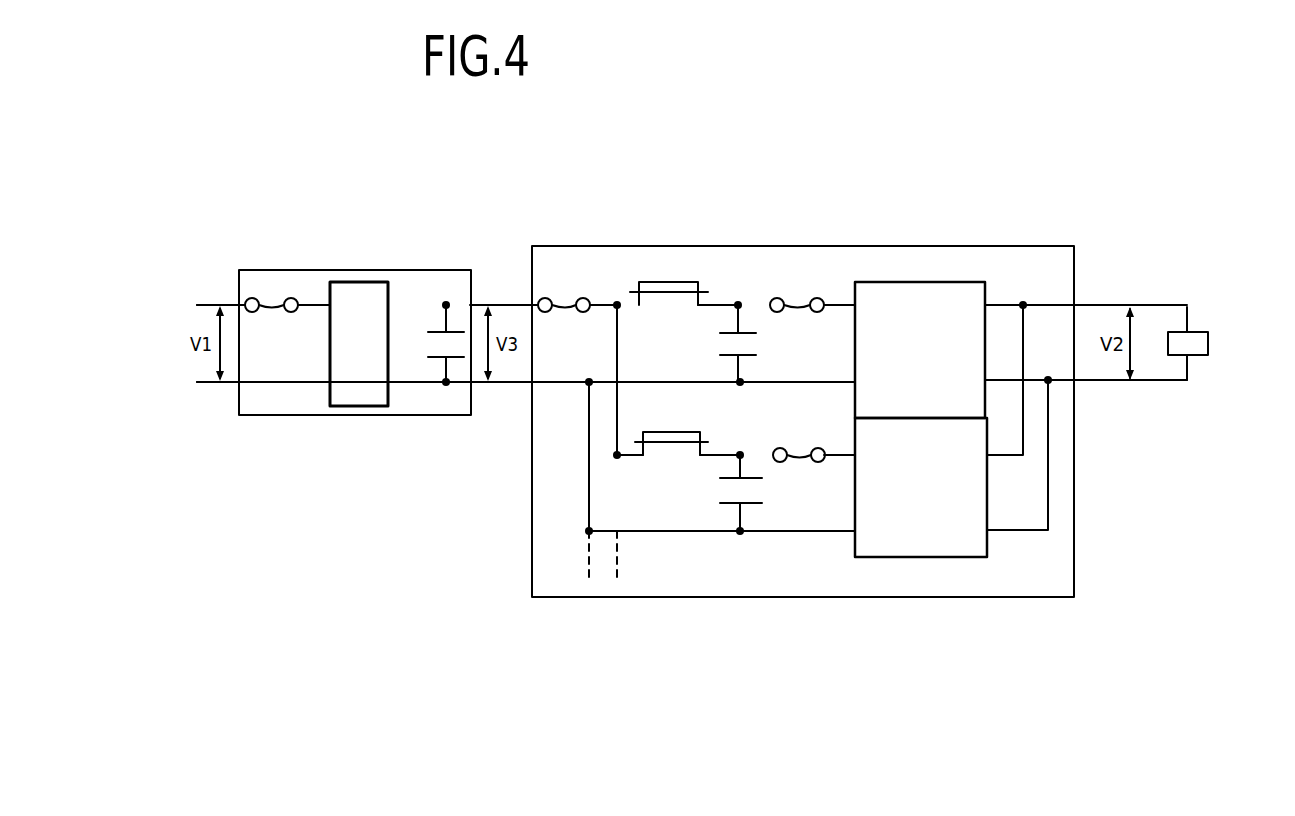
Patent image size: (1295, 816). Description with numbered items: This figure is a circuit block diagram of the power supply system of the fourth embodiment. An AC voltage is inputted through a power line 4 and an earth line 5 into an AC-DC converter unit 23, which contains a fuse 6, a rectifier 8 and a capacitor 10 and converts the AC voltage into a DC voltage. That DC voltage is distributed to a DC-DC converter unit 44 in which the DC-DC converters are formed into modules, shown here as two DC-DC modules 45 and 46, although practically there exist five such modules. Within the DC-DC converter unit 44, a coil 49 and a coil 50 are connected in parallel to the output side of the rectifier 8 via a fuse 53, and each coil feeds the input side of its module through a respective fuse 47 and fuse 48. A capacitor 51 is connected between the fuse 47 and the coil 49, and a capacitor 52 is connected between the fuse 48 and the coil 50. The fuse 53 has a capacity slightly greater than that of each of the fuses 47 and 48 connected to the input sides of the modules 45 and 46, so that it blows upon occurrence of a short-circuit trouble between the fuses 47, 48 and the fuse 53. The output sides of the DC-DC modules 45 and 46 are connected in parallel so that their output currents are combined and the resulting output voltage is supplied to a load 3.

The load 3 is at (1193, 356).
The power line 4 is at (200, 304).
The earth line 5 is at (200, 384).
The fuse 6 is at (268, 312).
The rectifier 8 is at (347, 407).
The capacitor 10 is at (433, 359).
The AC-DC converter unit 23 is at (243, 270).
The DC-DC converter unit 44 is at (1068, 246).
The DC-DC module 45 is at (975, 282).
The DC-DC module 46 is at (910, 558).
The fuse 47 is at (800, 312).
The fuse 48 is at (800, 449).
The coil 49 is at (647, 282).
The coil 50 is at (673, 443).
The capacitor 51 is at (720, 345).
The capacitor 52 is at (747, 487).
The fuse 53 is at (562, 302).